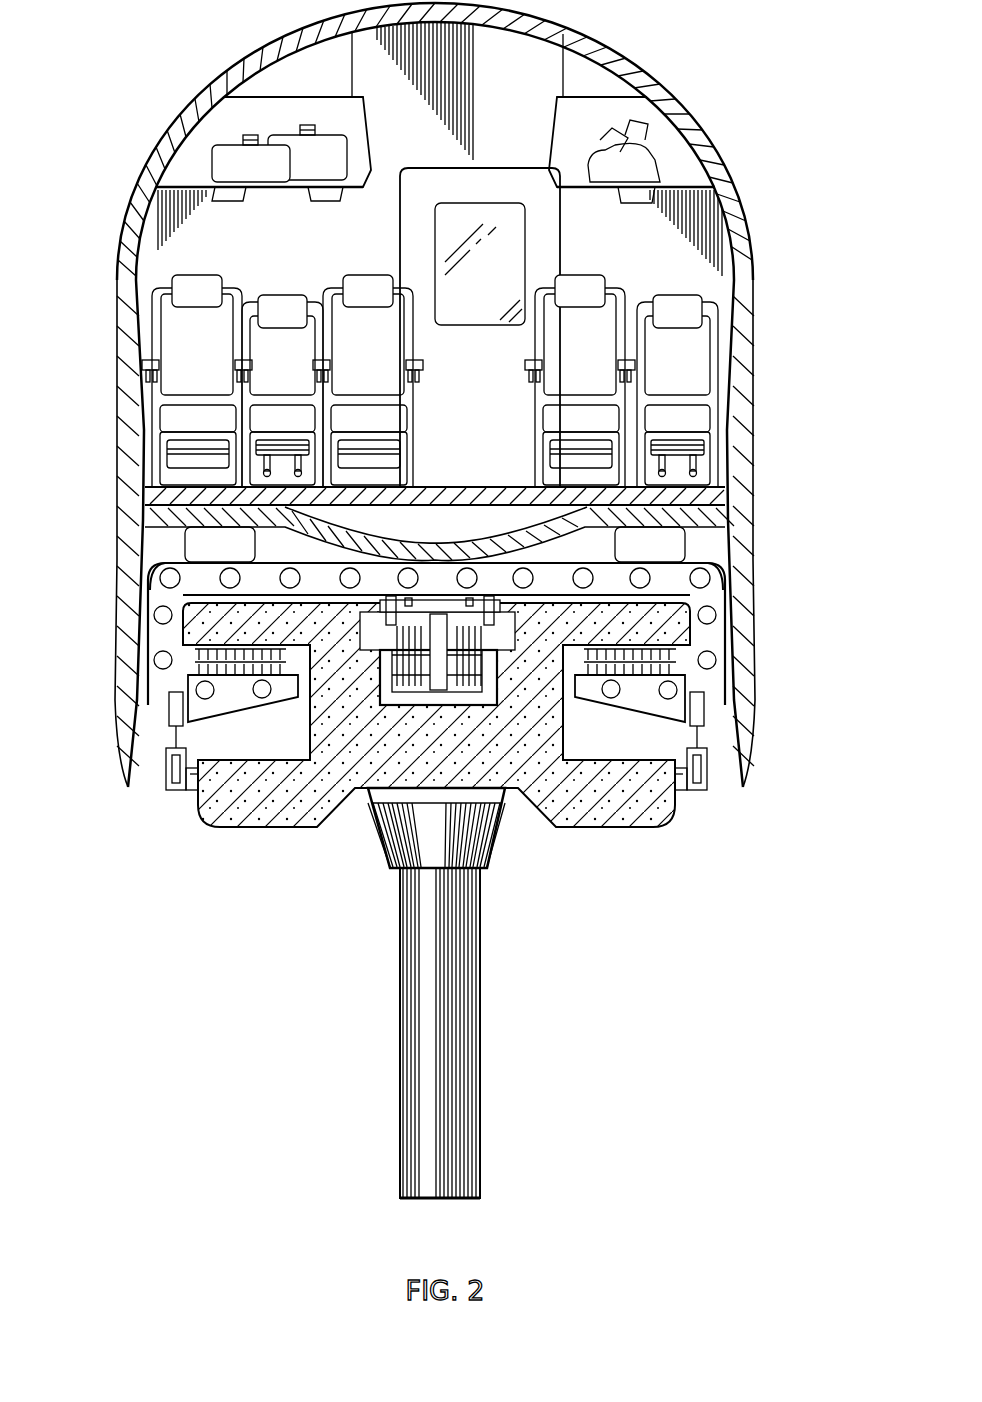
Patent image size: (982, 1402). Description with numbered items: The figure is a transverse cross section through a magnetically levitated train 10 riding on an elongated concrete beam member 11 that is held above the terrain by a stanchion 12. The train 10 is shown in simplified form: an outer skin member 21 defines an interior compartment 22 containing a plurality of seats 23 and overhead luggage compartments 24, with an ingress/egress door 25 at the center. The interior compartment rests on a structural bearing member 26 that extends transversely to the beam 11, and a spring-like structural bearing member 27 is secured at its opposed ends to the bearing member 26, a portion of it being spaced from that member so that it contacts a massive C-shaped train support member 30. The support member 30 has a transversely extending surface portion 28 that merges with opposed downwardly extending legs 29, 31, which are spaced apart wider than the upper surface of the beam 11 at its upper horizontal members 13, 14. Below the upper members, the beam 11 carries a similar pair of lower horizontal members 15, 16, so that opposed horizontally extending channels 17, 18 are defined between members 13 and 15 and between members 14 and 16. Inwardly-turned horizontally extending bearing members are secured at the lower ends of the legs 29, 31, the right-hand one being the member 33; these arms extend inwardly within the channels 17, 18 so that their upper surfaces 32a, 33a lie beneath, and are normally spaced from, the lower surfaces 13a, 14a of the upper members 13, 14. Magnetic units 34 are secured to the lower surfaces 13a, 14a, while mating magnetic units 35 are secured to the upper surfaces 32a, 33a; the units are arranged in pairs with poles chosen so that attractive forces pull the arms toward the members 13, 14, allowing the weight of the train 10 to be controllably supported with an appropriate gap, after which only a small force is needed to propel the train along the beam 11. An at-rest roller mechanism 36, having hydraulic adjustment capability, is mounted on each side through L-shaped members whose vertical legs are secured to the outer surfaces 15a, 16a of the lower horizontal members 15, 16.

The train 10 is at (752, 130).
The beam member 11 is at (655, 836).
The stanchion 12 is at (482, 1085).
The upper horizontal member 13 is at (165, 598).
The lower surface of upper horizontal member 13a is at (156, 616).
The upper horizontal member 14 is at (690, 615).
The lower surface of upper horizontal member 14a is at (716, 616).
The lower horizontal member 15 is at (220, 822).
The outer surface of lower horizontal member 15a is at (182, 792).
The lower horizontal member 16 is at (660, 822).
The outer surface of lower horizontal member 16a is at (692, 792).
The channel 17 is at (297, 745).
The channel 18 is at (576, 745).
The outer skin member 21 is at (755, 280).
The interior compartment 22 is at (473, 107).
The seats 23 is at (306, 285).
The overhead luggage compartments 24 is at (220, 118).
The ingress/egress door 25 is at (465, 410).
The structural bearing member 26 is at (150, 492).
The spring-like structural bearing member 27 is at (728, 512).
The transversely extending surface portion 28 is at (195, 542).
The downwardly extending leg 29 is at (169, 706).
The C-shaped train support member 30 is at (728, 565).
The downwardly extending leg 31 is at (704, 707).
The upper surface of inwardly-turned member 32a is at (157, 664).
The inwardly-turned horizontally extending bearing member 33 is at (640, 695).
The upper surface of inwardly-turned member 33a is at (716, 664).
The magnetic units 34 is at (275, 658).
The mating magnetic units 35 is at (240, 662).
The at-rest roller mechanism 36 is at (162, 807).